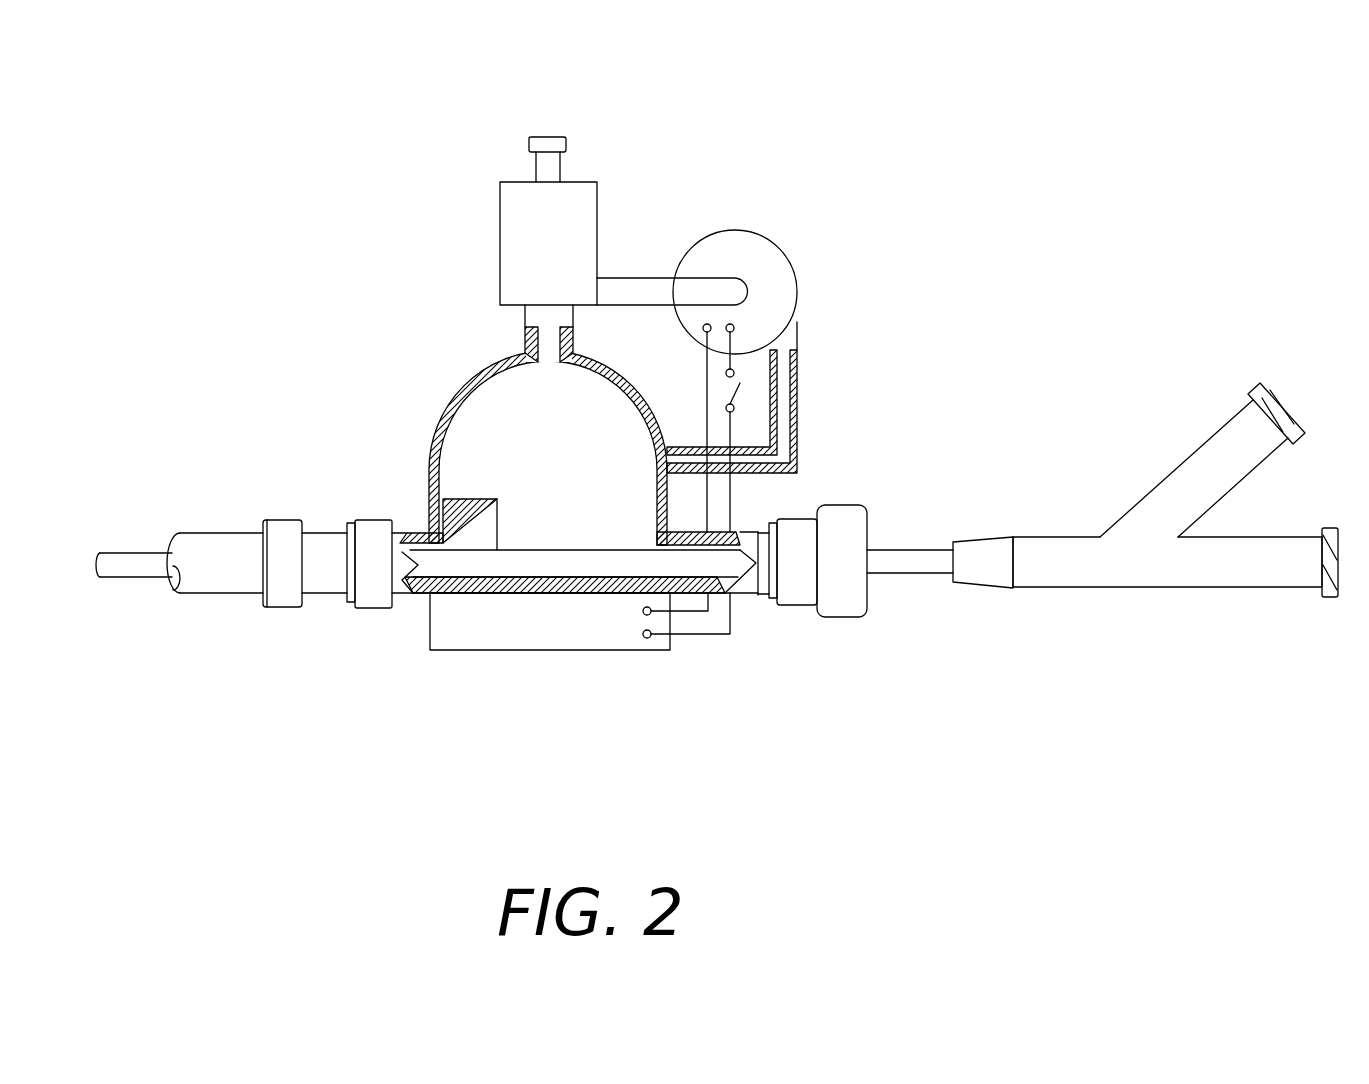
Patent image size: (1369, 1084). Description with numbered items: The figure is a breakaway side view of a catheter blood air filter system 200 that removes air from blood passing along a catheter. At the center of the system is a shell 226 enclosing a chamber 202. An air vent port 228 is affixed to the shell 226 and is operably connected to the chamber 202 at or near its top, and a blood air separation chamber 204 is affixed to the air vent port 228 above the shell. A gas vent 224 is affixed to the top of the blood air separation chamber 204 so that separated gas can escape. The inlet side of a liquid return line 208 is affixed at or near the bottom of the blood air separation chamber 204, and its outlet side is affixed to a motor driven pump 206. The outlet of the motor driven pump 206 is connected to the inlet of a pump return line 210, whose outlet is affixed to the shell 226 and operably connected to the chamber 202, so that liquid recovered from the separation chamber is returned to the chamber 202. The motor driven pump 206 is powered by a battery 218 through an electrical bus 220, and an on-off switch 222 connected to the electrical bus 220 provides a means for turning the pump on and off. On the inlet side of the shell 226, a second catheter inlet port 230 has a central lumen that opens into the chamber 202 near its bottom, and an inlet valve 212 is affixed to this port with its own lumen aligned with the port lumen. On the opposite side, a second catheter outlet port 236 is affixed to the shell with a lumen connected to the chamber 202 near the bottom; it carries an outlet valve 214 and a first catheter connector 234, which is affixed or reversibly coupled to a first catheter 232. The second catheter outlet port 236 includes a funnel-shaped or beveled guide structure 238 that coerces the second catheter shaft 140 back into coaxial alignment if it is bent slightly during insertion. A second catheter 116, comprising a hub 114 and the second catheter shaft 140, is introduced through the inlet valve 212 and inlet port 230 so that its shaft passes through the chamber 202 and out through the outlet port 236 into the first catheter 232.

The catheter blood air filter system 200 is at (237, 277).
The chamber 202 is at (492, 408).
The blood air separation chamber 204 is at (597, 210).
The motor driven pump 206 is at (807, 331).
The liquid return line 208 is at (676, 234).
The pump return line 210 is at (823, 393).
The inlet valve 212 is at (891, 619).
The outlet valve 214 is at (312, 523).
The battery 218 is at (586, 682).
The electrical bus 220 is at (730, 612).
The on-off switch 222 is at (838, 335).
The gas vent 224 is at (594, 115).
The shell 226 is at (431, 315).
The air vent port 228 is at (445, 243).
The second catheter inlet port 230 is at (689, 665).
The first catheter 232 is at (149, 524).
The first catheter connector 234 is at (180, 506).
The second catheter outlet port 236 is at (359, 462).
The guide structure 238 is at (407, 434).
The second catheter shaft 140 is at (240, 630).
The hub 114 is at (1175, 431).
The second catheter 116 is at (1102, 623).